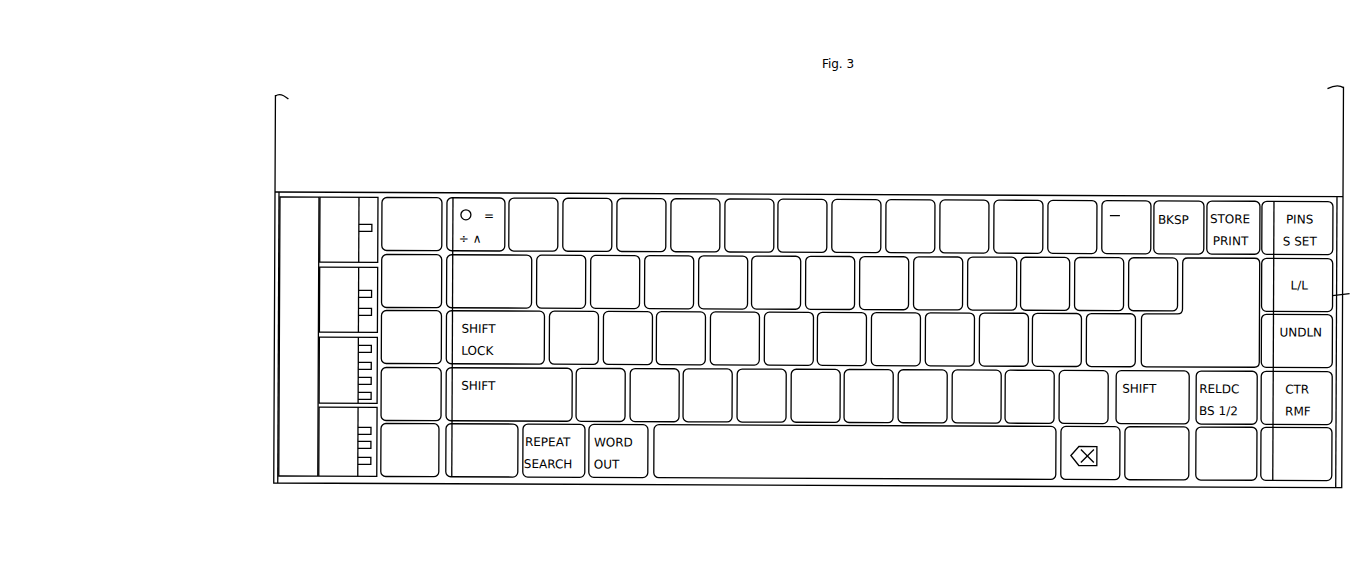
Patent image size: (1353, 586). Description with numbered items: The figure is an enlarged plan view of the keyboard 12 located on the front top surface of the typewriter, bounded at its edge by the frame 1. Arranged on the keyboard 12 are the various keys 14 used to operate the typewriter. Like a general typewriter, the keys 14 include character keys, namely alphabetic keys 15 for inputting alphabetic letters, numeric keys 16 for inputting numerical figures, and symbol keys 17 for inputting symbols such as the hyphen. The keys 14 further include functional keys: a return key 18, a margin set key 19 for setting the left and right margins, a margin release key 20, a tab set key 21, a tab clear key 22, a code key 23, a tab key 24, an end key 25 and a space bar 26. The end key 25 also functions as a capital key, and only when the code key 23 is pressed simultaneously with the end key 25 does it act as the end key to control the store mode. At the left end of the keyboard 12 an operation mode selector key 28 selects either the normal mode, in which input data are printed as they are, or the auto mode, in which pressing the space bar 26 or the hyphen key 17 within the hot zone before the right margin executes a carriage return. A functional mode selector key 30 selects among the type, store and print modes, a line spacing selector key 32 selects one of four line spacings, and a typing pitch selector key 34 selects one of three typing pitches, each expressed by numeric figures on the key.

The frame 1 is at (247, 121).
The keyboard 12 is at (673, 500).
The keys 14 is at (983, 415).
The alphabetic keys 15 is at (883, 363).
The numeric keys 16 is at (643, 203).
The symbol keys 17 is at (1129, 205).
The return key 18 is at (1214, 276).
The margin set key 19 is at (372, 292).
The margin release key 20 is at (359, 227).
The tab set key 21 is at (382, 326).
The tab clear key 22 is at (382, 383).
The code key 23 is at (416, 480).
The tab key 24 is at (522, 262).
The end key 25 is at (502, 480).
The space bar 26 is at (722, 480).
The operation mode selector key 28 is at (319, 242).
The functional mode selector key 30 is at (319, 305).
The line spacing selector key 32 is at (319, 352).
The typing pitch selector key 34 is at (319, 440).